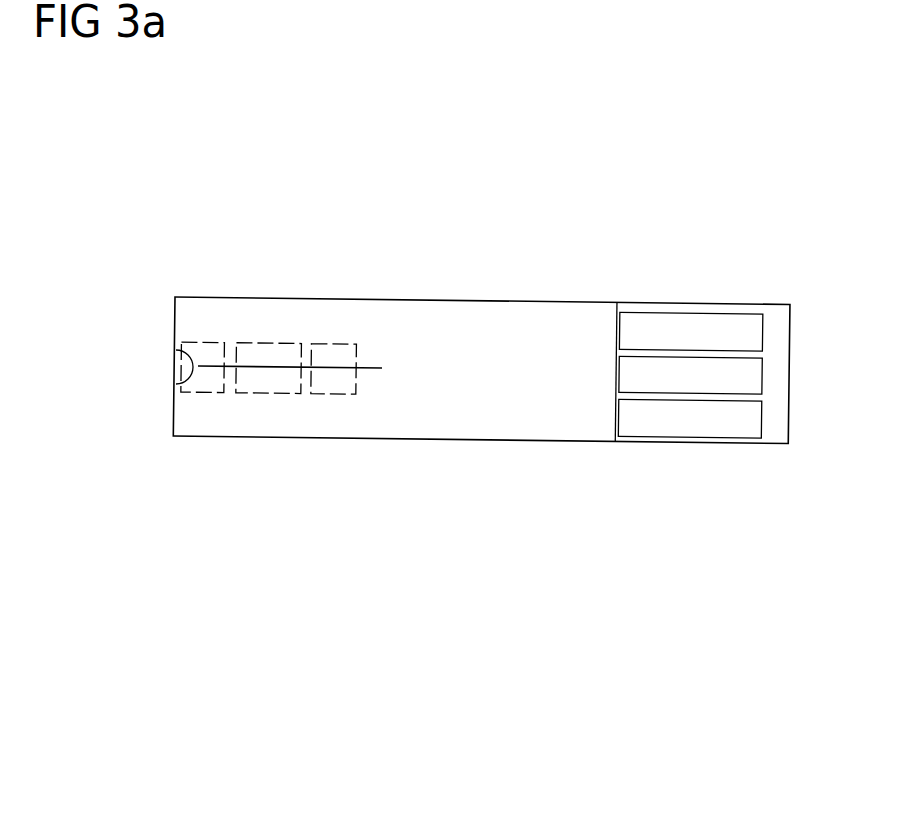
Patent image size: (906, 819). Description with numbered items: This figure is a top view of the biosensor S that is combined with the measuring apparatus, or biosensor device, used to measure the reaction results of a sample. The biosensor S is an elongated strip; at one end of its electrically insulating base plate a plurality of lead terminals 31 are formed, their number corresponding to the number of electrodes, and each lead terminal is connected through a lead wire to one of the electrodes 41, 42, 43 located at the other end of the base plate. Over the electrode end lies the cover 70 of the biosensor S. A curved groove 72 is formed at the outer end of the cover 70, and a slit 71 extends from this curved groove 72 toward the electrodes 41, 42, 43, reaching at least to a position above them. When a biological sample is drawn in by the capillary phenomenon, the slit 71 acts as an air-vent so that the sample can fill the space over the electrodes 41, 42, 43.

The biosensor S is at (590, 463).
The cover 70 is at (470, 420).
The lead terminals 31 is at (682, 328).
The slit 71 is at (373, 368).
The curved groove 72 is at (177, 365).
The electrode 41 is at (260, 393).
The electrode 42 is at (333, 393).
The electrode 43 is at (203, 393).